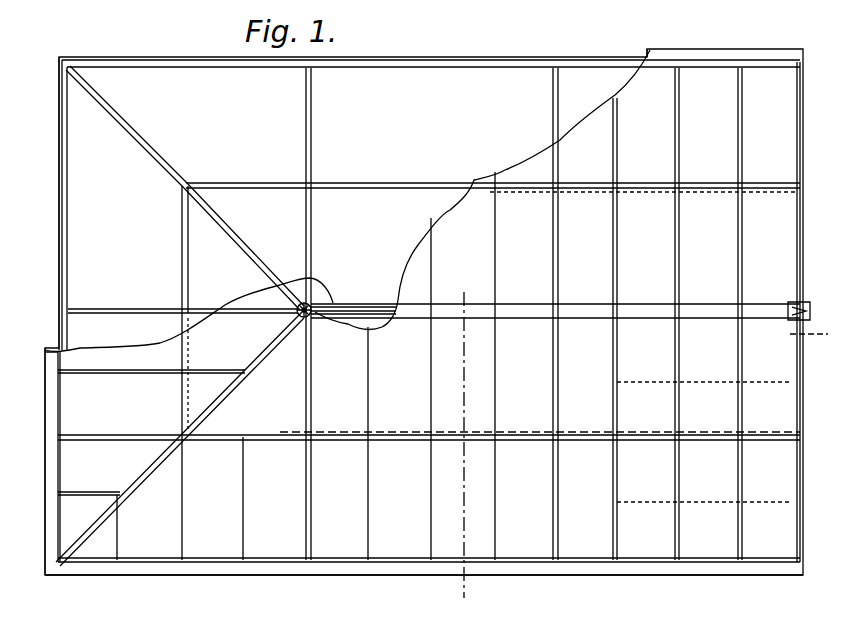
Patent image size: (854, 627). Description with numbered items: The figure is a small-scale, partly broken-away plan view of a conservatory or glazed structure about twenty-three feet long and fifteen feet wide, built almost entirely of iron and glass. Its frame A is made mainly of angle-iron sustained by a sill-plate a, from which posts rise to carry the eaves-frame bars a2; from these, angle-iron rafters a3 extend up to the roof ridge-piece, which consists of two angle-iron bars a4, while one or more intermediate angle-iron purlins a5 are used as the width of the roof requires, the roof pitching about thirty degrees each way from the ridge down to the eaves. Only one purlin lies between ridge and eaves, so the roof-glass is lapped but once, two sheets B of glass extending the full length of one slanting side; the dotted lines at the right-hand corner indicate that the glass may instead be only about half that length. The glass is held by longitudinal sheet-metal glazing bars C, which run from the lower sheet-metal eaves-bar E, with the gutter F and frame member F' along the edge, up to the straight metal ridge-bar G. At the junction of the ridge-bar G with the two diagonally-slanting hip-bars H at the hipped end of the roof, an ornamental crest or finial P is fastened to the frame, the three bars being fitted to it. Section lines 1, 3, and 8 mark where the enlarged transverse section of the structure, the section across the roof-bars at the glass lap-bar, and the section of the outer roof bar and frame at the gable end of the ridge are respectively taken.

The sill-plate a is at (188, 57).
The eaves-frame bars a2 is at (283, 66).
The angle-iron rafters a3 is at (308, 163).
The ridge-piece angle-iron bars a4 is at (370, 296).
The intermediate angle-iron purlins a5 is at (413, 186).
The frame A is at (347, 200).
The sheets of glass B is at (690, 148).
The longitudinal glazing bars C is at (432, 242).
The eaves-bar E is at (714, 70).
The gutter F is at (424, 581).
The side frame member F' is at (406, 302).
The ridge-bar G is at (662, 318).
The hip-bars H is at (272, 290).
The ornamental crest or finial P is at (312, 296).
The section line 1 1 is at (461, 449).
The section line 3 3 is at (540, 429).
The section line 8 8 is at (806, 335).